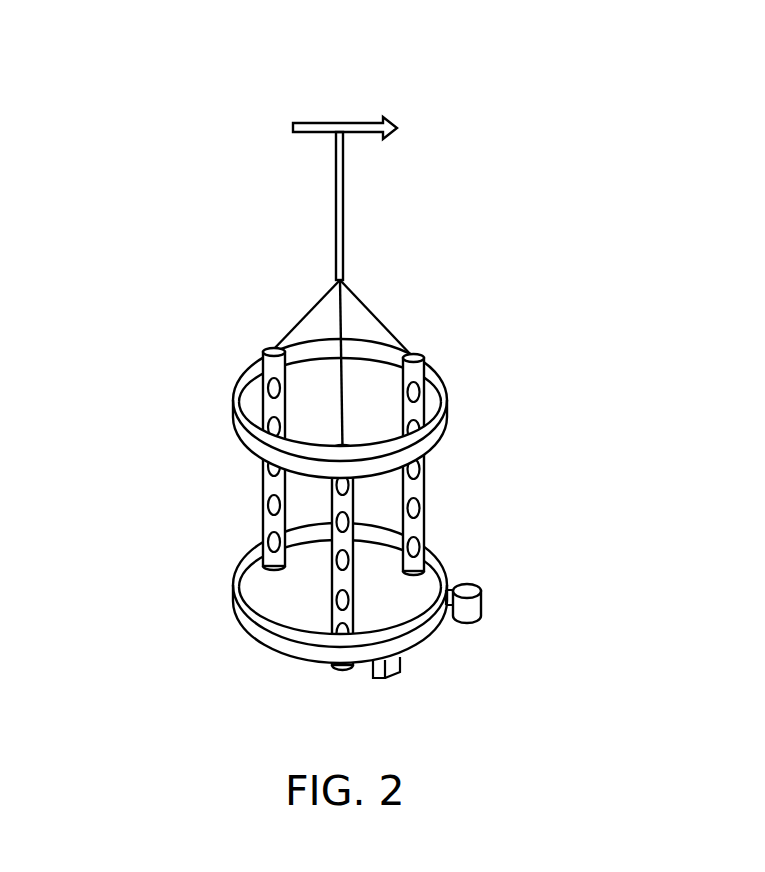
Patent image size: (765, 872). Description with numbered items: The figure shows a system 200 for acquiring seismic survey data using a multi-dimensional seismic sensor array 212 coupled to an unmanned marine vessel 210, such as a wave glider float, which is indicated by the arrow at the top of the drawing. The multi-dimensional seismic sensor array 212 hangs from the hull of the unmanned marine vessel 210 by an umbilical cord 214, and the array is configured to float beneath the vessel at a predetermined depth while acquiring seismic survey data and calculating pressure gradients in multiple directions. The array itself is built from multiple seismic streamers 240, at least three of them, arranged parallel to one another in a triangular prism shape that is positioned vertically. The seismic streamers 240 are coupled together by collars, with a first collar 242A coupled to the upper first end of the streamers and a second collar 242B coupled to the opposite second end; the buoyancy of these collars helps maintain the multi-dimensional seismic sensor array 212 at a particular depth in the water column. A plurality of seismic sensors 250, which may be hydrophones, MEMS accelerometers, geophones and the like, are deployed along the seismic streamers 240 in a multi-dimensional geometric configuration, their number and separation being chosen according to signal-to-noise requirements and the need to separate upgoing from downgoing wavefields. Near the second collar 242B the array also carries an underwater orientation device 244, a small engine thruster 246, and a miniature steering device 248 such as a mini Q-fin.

The system 200 is at (130, 36).
The unmanned marine vessel 210 is at (355, 122).
The multi-dimensional seismic sensor array 212 is at (362, 494).
The umbilical cord 214 is at (343, 197).
The seismic streamers 240 is at (359, 509).
The first collar 242A is at (246, 372).
The second collar 242B is at (247, 618).
The underwater orientation device 244 is at (400, 670).
The small engine thruster 246 is at (470, 607).
The miniature steering device 248 is at (450, 590).
The seismic sensors 250 is at (268, 508).